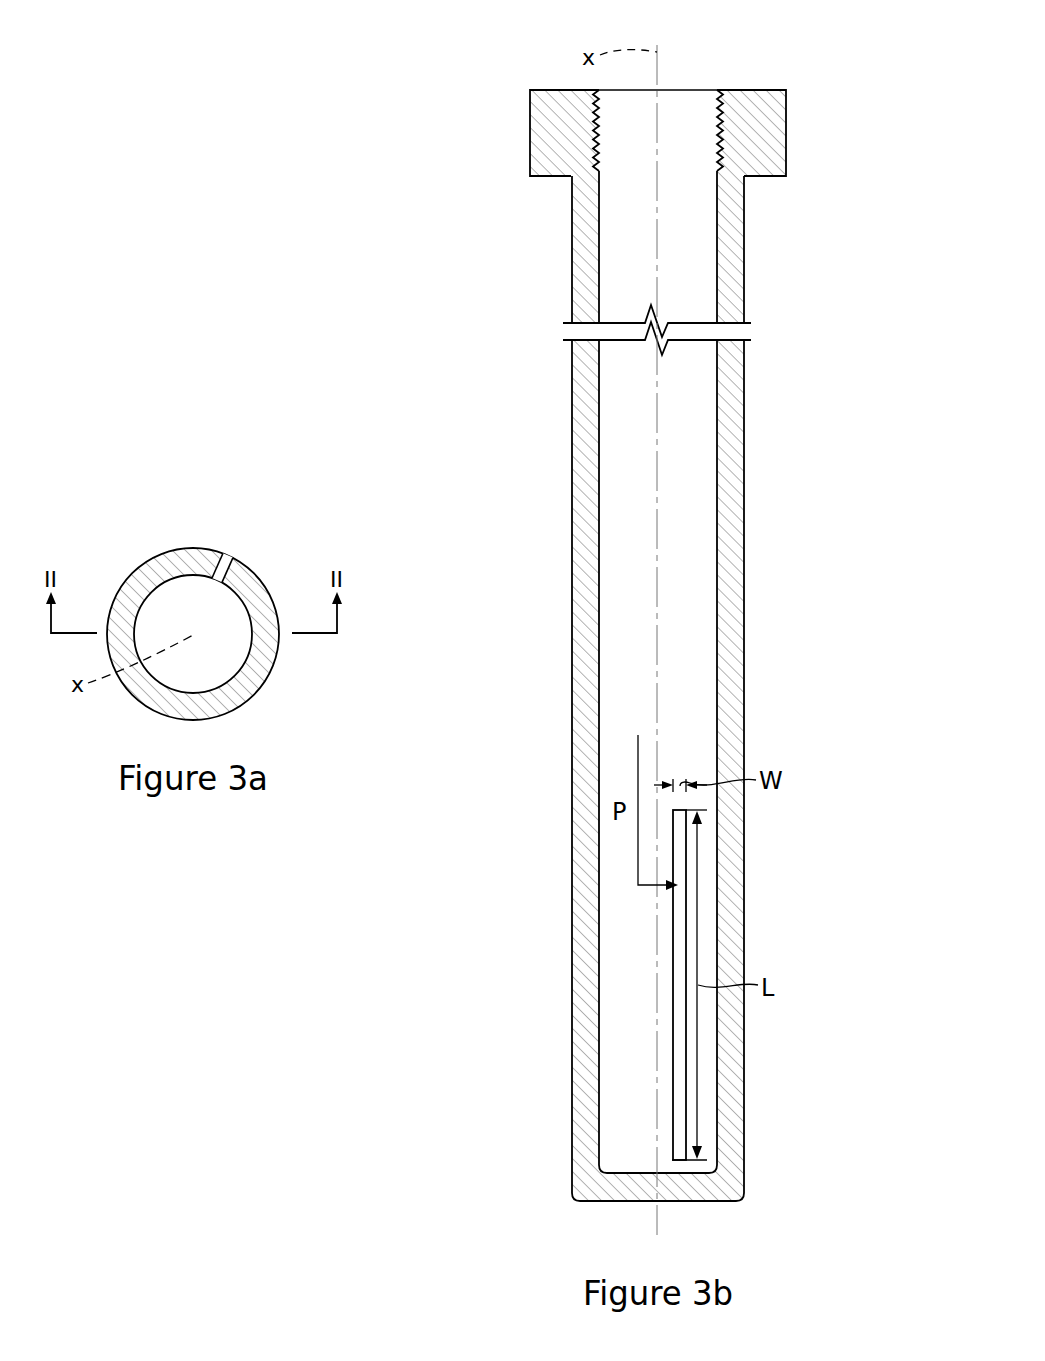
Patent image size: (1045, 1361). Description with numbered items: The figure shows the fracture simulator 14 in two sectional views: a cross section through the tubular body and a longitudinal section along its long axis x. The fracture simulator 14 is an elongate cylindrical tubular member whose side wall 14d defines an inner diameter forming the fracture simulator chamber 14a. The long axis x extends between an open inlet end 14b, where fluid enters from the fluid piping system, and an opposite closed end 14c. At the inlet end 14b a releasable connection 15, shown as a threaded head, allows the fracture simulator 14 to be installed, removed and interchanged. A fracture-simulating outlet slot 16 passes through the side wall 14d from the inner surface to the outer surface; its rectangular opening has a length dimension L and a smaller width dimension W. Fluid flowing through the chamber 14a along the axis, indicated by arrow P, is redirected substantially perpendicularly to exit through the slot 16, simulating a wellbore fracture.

In FIG. 3B, the fracture simulator 14 is at (629, 646).
In FIG. 3B, the fracture simulator chamber 14a is at (700, 522).
In FIG. 3B, the inlet end 14b is at (693, 110).
In FIG. 3A, the closed end 14c is at (232, 660).
In FIG. 3B, the closed end 14c is at (697, 1190).
In FIG. 3A, the side wall 14d is at (146, 583).
In FIG. 3B, the side wall 14d is at (735, 717).
In FIG. 3B, the releasable connection 15 is at (552, 125).
In FIG. 3A, the fracture-simulating outlet slot 16 is at (224, 560).
In FIG. 3B, the fracture-simulating outlet slot 16 is at (689, 918).